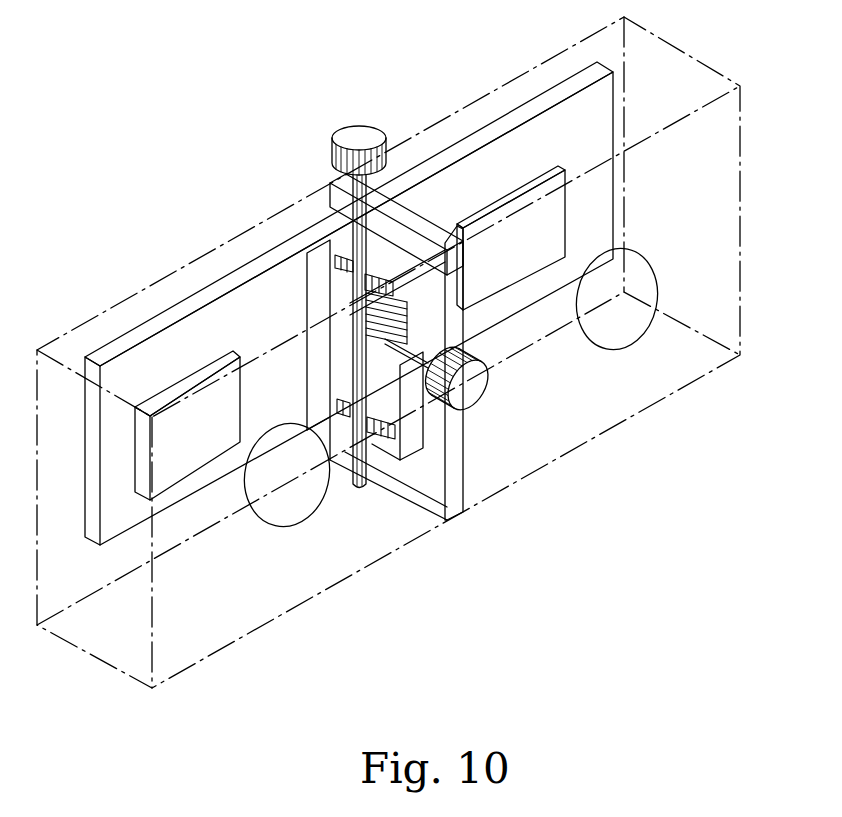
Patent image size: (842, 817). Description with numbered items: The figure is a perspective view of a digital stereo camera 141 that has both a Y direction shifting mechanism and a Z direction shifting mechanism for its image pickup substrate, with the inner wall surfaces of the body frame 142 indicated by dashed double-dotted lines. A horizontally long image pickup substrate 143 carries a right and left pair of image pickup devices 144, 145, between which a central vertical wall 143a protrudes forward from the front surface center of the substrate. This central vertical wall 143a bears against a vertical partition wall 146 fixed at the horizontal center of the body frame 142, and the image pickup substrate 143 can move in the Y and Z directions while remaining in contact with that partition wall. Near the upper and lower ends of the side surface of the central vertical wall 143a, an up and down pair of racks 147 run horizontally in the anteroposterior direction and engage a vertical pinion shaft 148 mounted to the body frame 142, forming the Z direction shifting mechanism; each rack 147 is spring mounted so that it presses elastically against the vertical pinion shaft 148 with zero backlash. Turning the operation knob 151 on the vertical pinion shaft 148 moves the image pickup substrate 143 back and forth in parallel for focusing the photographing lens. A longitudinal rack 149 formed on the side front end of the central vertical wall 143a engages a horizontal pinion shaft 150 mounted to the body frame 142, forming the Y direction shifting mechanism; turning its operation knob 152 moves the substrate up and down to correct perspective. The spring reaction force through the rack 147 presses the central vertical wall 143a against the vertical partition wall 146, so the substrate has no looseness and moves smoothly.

The digital stereo camera 141 is at (203, 222).
The body frame 142 is at (122, 302).
The image pickup substrate 143 is at (185, 307).
The central vertical wall 143a is at (398, 265).
The image pickup device 144 is at (183, 457).
The image pickup device 145 is at (515, 270).
The vertical partition wall 146 is at (393, 208).
The rack 147 is at (338, 257).
The vertical pinion shaft 148 is at (377, 460).
The longitudinal rack 149 is at (395, 365).
The horizontal pinion shaft 150 is at (323, 250).
The operation knob 151 is at (360, 135).
The operation knob 152 is at (472, 393).